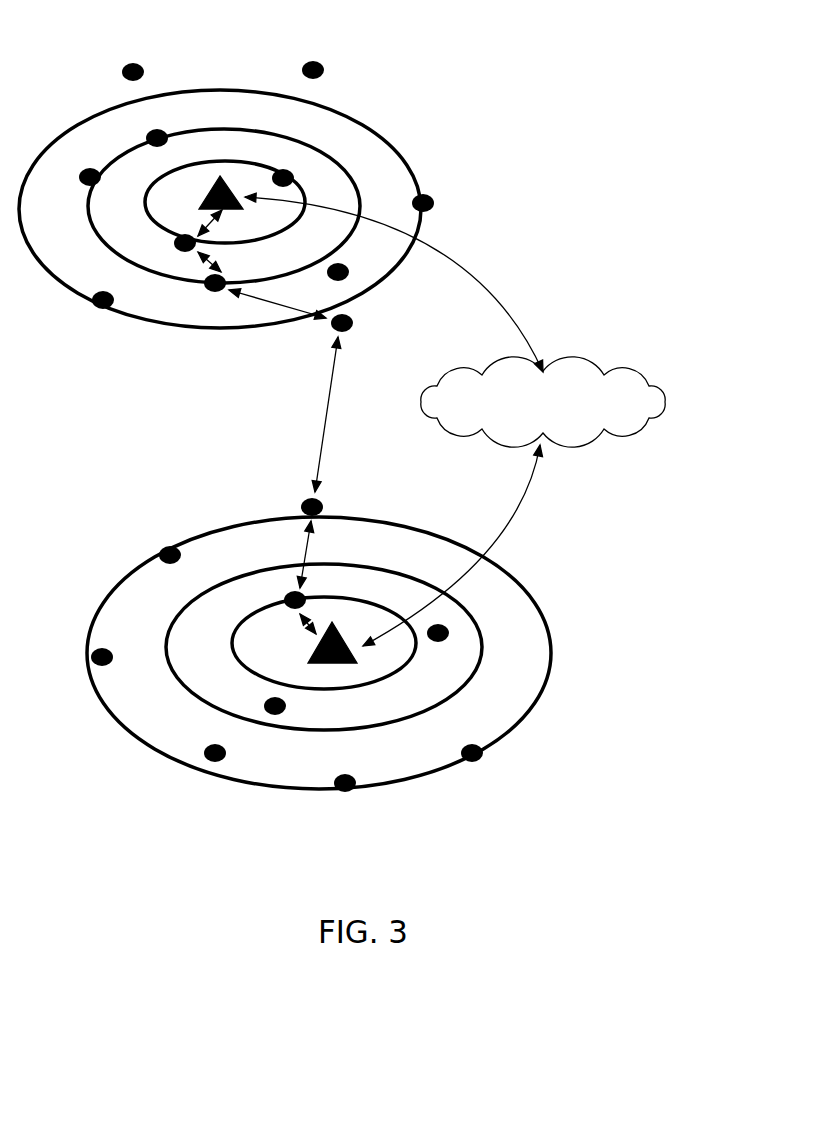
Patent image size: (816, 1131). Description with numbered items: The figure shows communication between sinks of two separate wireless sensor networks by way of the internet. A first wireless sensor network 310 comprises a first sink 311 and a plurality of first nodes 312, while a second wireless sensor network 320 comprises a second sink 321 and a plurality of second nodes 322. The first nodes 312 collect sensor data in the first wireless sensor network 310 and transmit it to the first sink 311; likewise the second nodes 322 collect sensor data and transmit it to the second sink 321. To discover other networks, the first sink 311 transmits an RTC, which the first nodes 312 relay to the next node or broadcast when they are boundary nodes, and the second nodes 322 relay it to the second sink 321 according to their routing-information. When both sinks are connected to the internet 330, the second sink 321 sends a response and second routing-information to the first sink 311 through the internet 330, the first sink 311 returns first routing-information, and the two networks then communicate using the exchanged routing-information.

The first wireless sensor network 310 is at (226, 212).
The first sink 311 is at (233, 172).
The first nodes 312 is at (362, 326).
The second wireless sensor network 320 is at (319, 654).
The second sink 321 is at (328, 663).
The second nodes 322 is at (332, 503).
The internet 330 is at (605, 367).